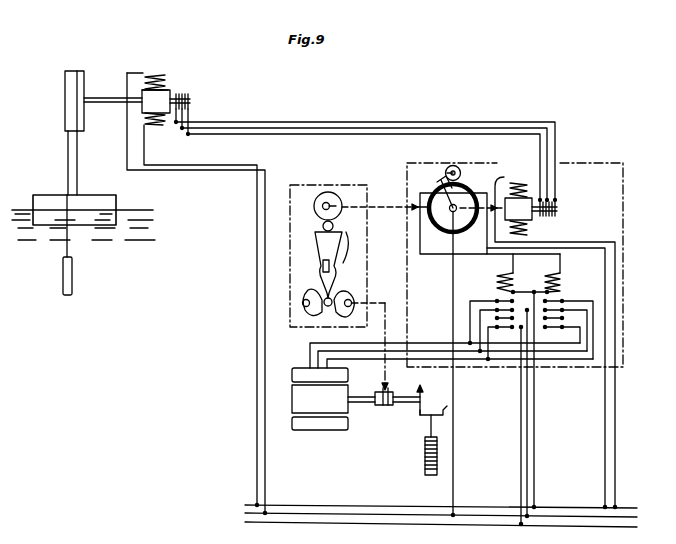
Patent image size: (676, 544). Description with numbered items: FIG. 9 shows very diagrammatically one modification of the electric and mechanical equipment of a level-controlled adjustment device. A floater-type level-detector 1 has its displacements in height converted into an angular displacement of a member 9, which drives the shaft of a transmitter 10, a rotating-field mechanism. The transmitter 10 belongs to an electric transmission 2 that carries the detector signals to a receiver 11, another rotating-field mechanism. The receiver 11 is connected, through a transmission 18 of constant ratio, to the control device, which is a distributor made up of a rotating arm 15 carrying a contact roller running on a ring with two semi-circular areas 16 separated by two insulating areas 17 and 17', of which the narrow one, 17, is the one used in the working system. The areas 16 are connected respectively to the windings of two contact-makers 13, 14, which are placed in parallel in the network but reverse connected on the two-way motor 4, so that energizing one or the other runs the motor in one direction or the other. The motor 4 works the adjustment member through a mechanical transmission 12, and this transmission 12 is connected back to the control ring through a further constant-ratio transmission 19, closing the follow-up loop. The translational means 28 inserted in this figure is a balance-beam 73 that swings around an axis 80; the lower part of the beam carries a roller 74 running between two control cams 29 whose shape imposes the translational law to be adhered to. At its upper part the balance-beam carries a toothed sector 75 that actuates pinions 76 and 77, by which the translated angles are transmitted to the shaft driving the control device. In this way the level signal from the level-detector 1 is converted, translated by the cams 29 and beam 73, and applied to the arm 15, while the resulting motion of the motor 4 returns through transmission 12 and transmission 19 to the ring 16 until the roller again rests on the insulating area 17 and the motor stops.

The level-detector 1 is at (68, 102).
The member 9 is at (103, 98).
The transmitter 10 is at (170, 96).
The electric transmission 2 is at (282, 122).
The translational means 28 is at (326, 189).
The pinion 77 is at (318, 196).
The pinion 76 is at (322, 226).
The balance-beam 73 is at (318, 256).
The toothed sector 75 is at (353, 248).
The axis 80 is at (330, 268).
The control cams 29 is at (333, 298).
The roller 74 is at (334, 301).
The semi-circular areas 16 is at (421, 196).
The rotating arm 15 is at (440, 172).
The insulating area 17 is at (470, 174).
The insulating area 17' is at (438, 252).
The transmission 19 is at (378, 210).
The transmission 18 is at (506, 176).
The receiver 11 is at (524, 213).
The contact-maker 13 is at (498, 278).
The contact-maker 14 is at (559, 281).
The motor 4 is at (298, 404).
The mechanical transmission 12 is at (430, 426).